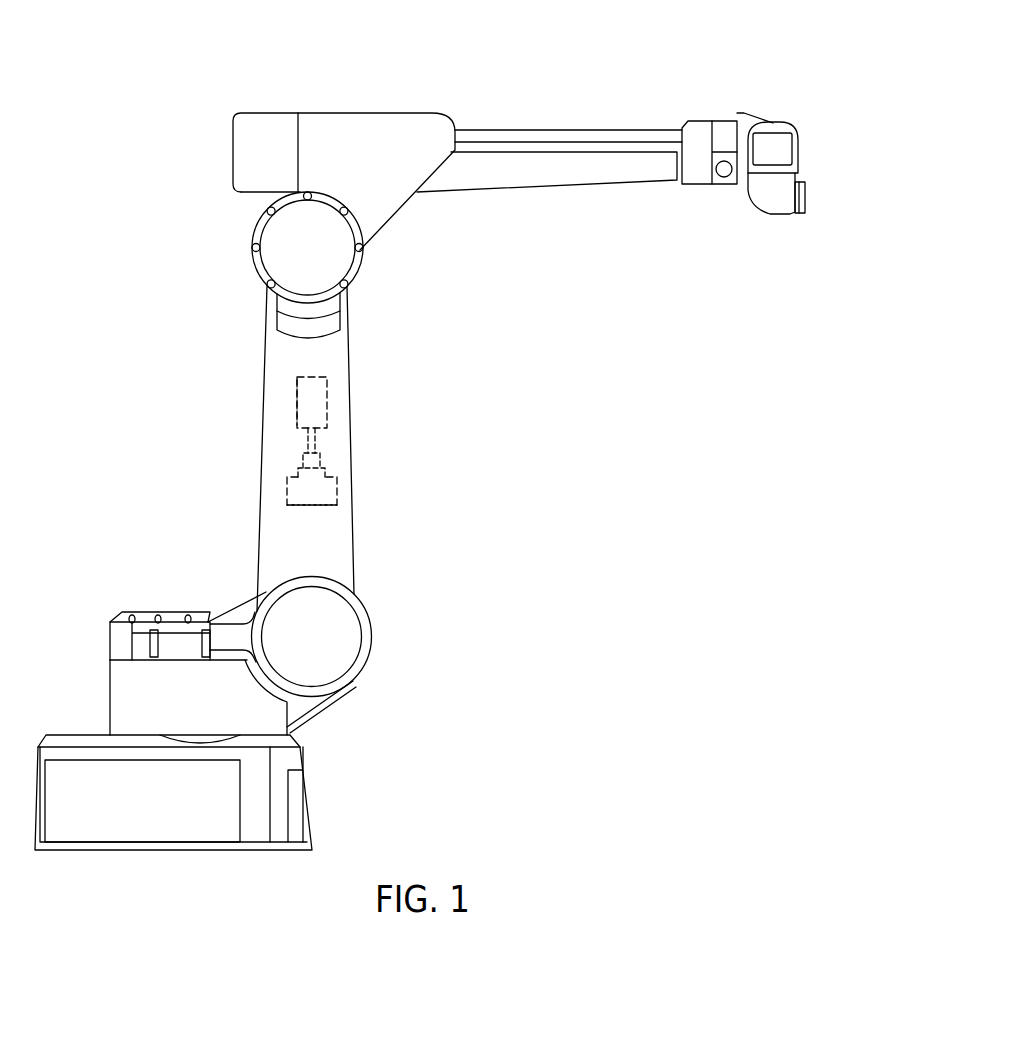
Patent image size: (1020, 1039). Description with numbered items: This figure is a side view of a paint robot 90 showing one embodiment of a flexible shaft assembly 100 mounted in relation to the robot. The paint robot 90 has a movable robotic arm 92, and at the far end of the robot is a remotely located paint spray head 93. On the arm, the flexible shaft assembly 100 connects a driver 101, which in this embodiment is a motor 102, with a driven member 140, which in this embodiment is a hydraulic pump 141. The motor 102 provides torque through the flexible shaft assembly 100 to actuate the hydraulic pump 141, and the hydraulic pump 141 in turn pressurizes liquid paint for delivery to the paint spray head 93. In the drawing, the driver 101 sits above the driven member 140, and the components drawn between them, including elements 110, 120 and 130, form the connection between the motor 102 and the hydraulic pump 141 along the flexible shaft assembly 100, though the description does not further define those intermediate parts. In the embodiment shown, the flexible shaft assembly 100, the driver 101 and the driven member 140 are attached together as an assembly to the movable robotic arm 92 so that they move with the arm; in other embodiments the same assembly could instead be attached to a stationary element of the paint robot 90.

The paint robot 90 is at (447, 434).
The movable robotic arm 92 is at (352, 341).
The paint spray head 93 is at (806, 198).
The flexible shaft assembly 100 is at (299, 449).
The driver 101 is at (340, 386).
The motor 102 is at (296, 407).
The shaft 110 is at (302, 443).
The coupler 120 is at (325, 456).
The mount 130 is at (334, 471).
The driven member 140 is at (347, 503).
The hydraulic pump 141 is at (287, 503).